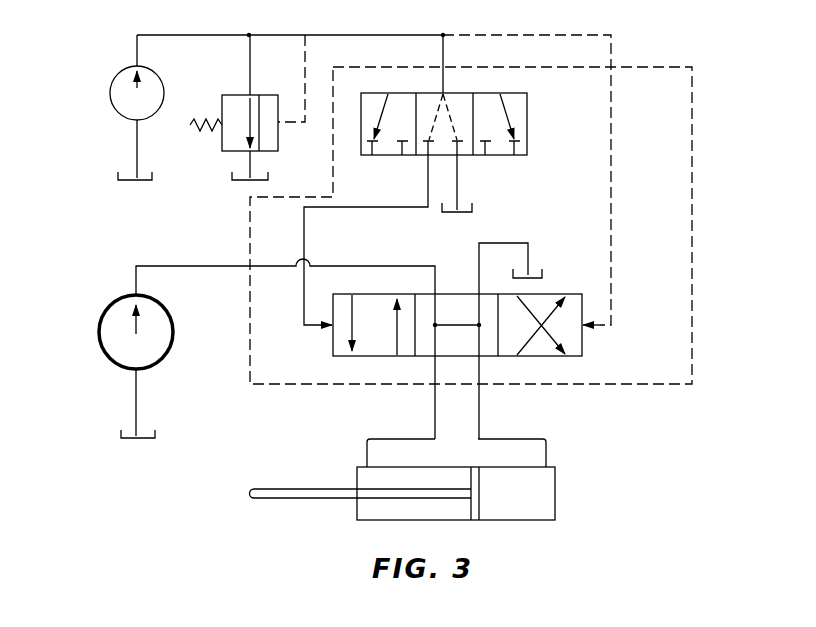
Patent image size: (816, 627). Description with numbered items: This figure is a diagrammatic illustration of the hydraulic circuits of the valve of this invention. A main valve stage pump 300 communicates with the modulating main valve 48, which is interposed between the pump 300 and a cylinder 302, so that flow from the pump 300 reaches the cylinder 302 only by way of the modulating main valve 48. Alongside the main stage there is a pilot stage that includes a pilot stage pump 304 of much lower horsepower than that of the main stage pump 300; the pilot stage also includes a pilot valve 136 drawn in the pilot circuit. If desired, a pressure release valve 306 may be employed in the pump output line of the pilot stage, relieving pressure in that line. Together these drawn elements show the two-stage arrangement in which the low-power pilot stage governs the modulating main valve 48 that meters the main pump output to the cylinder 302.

The pilot pump 304 is at (118, 76).
The pressure release valve 306 is at (229, 100).
The solenoid operated pilot valve 136 is at (518, 155).
The main valve stage pump 300 is at (110, 306).
The modulating main valve 48 is at (564, 294).
The cylinder 302 is at (357, 473).